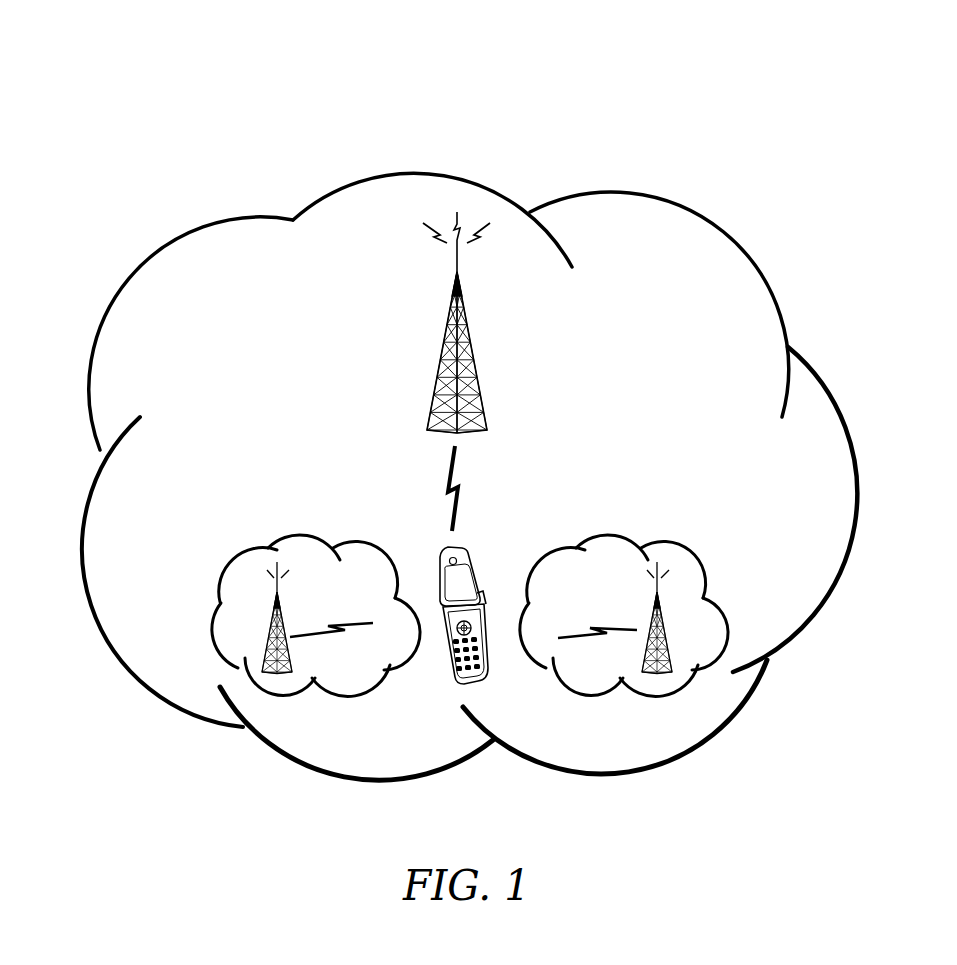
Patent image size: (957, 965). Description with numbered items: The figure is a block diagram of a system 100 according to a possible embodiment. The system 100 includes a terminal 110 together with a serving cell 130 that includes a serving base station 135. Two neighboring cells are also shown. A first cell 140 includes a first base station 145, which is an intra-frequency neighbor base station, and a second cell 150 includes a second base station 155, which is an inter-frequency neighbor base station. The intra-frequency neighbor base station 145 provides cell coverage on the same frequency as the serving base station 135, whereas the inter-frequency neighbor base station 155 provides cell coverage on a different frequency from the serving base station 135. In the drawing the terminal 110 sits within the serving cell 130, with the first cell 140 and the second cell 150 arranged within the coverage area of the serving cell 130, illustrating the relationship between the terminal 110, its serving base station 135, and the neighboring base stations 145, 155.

The system 100 is at (100, 52).
The terminal 110 is at (463, 547).
The serving cell 130 is at (197, 237).
The serving base station 135 is at (438, 353).
The first cell 140 is at (687, 548).
The first base station 145 is at (655, 603).
The second cell 150 is at (231, 559).
The second base station 155 is at (282, 600).